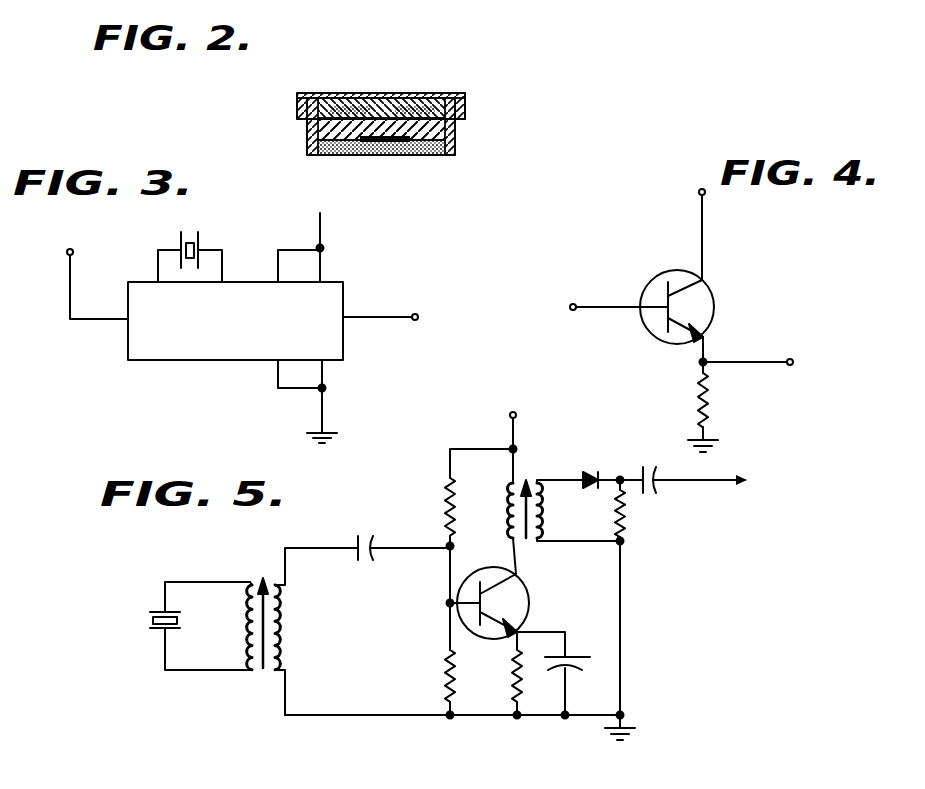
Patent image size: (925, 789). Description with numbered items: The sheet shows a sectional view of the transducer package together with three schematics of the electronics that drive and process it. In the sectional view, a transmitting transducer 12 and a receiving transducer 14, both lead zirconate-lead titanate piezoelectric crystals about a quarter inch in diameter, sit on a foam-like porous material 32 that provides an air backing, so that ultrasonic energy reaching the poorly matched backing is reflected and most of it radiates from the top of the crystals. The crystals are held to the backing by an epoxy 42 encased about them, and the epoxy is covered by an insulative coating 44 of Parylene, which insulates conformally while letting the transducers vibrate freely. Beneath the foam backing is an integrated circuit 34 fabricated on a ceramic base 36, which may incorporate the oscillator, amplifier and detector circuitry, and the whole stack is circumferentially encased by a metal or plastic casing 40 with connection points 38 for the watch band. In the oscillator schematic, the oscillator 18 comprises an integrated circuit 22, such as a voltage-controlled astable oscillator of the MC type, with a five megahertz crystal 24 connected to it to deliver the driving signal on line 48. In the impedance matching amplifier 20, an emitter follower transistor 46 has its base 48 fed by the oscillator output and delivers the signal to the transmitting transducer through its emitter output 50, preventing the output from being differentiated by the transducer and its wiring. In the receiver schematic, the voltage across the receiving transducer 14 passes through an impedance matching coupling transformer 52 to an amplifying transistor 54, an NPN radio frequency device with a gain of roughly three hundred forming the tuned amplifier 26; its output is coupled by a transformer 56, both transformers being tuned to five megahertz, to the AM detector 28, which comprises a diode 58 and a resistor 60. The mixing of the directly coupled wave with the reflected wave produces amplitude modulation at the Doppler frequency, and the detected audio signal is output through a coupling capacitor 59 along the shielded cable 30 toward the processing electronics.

In FIG. 2, the transducer 12 is at (368, 66).
In FIG. 2, the receiving transducer 14 is at (430, 98).
In FIG. 5, the receiving transducer 14 is at (155, 630).
In FIG. 3, the oscillator 18 is at (352, 294).
In FIG. 4, the impedance matching amplifier 20 is at (679, 320).
In FIG. 3, the integrated circuit 22 is at (210, 362).
In FIG. 3, the crystal 24 is at (203, 250).
In FIG. 5, the tuned amplifier 26 is at (451, 591).
In FIG. 5, the AM detector 28 is at (654, 515).
In FIG. 5, the shielded cable 30 is at (748, 480).
In FIG. 2, the foam-like porous material 32 is at (455, 128).
In FIG. 2, the integrated circuit 34 is at (380, 155).
In FIG. 2, the ceramic base 36 is at (432, 157).
In FIG. 2, the connection points 38 is at (297, 103).
In FIG. 2, the casing 40 is at (307, 131).
In FIG. 2, the epoxy 42 is at (415, 97).
In FIG. 2, the insulative coating 44 is at (322, 96).
In FIG. 4, the emitter follower transistor 46 is at (713, 297).
In FIG. 3, the base 48 is at (386, 317).
In FIG. 4, the base 48 is at (597, 307).
In FIG. 4, the emitter output 50 is at (763, 364).
In FIG. 5, the impedance matching coupling transformer 52 is at (292, 622).
In FIG. 5, the amplifying transistor 54 is at (534, 598).
In FIG. 5, the transformer 56 is at (529, 470).
In FIG. 5, the diode 58 is at (594, 471).
In FIG. 5, the coupling capacitor 59 is at (660, 490).
In FIG. 5, the resistor 60 is at (630, 515).